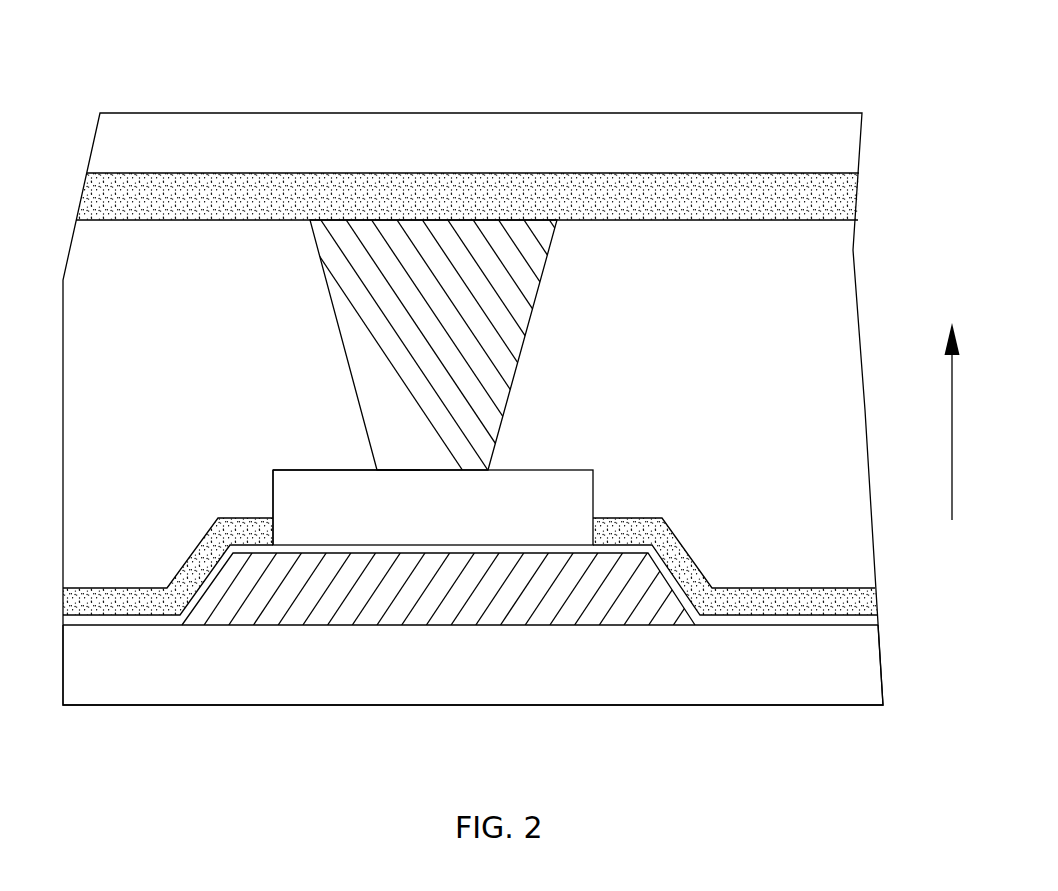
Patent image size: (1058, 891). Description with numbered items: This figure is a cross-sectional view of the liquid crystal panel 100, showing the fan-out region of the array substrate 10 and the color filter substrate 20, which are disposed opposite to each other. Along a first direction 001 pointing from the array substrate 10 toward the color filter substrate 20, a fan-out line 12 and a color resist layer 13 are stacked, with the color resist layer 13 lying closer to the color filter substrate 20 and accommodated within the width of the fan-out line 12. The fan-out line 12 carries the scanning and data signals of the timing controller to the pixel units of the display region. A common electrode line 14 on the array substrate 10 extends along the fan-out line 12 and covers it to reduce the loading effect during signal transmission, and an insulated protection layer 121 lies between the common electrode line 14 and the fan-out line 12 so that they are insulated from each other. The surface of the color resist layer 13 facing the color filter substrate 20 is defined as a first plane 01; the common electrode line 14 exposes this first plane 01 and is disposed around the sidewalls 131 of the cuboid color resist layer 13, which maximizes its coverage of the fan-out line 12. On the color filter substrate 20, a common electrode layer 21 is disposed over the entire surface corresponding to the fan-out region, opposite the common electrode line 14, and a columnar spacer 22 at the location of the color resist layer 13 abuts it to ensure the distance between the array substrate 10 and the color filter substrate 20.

The liquid crystal panel 100 is at (140, 91).
The color filter substrate 20 is at (643, 111).
The common electrode layer 21 is at (705, 220).
The columnar spacer 22 is at (475, 348).
The color resist layer 13 is at (562, 497).
The first plane 01 is at (332, 478).
The sidewall 131 is at (273, 482).
The common electrode line 14 is at (194, 552).
The fan-out line 12 is at (448, 601).
The insulated protection layer 121 is at (150, 623).
The array substrate 10 is at (318, 706).
The first direction 001 is at (929, 421).